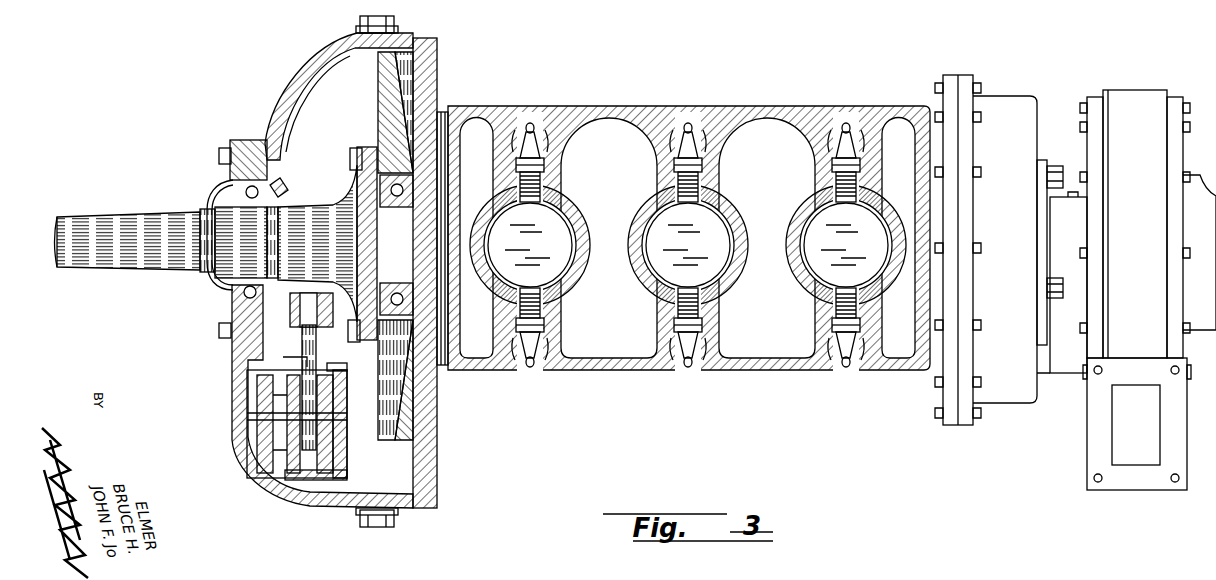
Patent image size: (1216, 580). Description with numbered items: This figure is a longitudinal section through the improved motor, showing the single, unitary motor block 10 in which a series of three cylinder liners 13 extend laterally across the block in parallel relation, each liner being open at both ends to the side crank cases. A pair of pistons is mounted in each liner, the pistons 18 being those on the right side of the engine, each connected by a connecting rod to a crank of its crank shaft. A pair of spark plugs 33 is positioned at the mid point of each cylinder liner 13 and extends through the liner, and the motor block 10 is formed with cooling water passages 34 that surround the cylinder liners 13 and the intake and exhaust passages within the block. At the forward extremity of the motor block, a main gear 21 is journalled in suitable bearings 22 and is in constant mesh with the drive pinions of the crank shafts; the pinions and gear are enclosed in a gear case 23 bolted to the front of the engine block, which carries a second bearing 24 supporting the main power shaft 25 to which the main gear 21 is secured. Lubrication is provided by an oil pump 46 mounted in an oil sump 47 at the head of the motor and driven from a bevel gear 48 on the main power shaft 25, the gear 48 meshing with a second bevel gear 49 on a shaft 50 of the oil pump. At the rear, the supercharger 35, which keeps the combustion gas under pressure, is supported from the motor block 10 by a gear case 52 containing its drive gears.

The motor block 10 is at (720, 106).
The cylinder liners 13 is at (577, 219).
The pistons 18 is at (578, 262).
The main gear 21 is at (380, 93).
The bearings 22 is at (455, 106).
The gear case 23 is at (285, 99).
The second bearing 24 is at (228, 182).
The main power shaft 25 is at (172, 262).
The spark plugs 33 is at (536, 125).
The cooling water passages 34 is at (623, 340).
The supercharger 35 is at (1155, 163).
The oil pump 46 is at (233, 443).
The oil sump 47 is at (347, 489).
The bevel gear 48 is at (284, 187).
The second bevel gear 49 is at (303, 348).
The shaft of the oil pump 50 is at (305, 358).
The gear case 52 is at (995, 118).